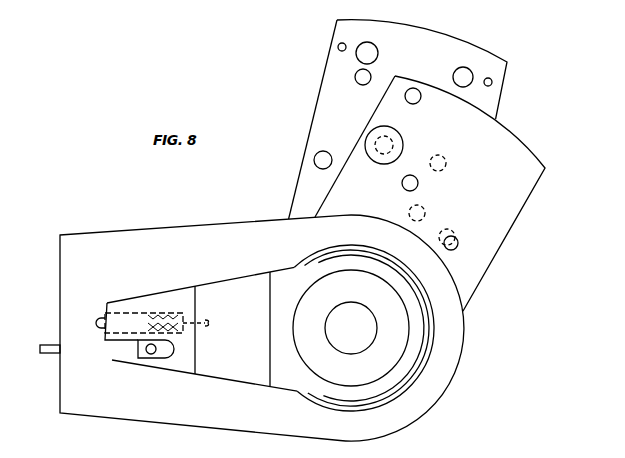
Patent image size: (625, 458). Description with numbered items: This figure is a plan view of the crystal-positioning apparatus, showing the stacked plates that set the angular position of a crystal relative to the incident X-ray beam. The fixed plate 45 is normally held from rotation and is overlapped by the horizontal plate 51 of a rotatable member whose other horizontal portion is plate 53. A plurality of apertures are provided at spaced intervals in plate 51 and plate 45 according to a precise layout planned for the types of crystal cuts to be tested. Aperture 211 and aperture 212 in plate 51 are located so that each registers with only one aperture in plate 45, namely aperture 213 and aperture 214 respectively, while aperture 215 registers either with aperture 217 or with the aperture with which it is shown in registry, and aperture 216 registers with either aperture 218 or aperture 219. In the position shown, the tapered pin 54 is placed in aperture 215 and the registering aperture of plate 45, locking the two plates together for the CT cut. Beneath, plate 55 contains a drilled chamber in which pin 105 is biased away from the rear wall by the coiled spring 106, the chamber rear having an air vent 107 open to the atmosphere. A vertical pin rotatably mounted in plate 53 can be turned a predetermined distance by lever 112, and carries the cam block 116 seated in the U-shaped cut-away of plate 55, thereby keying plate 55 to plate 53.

The plate 45 is at (333, 56).
The horizontal plate 51 is at (492, 261).
The horizontal plate 53 is at (199, 225).
The tapered pin 54 is at (370, 138).
The plate 55 is at (232, 279).
The pin 105 is at (100, 323).
The coiled spring 106 is at (163, 313).
The air vent 107 is at (211, 323).
The lever 112 is at (49, 354).
The cam block 116 is at (155, 359).
The aperture 211 is at (419, 100).
The aperture 212 is at (419, 183).
The aperture 213 is at (359, 84).
The aperture 214 is at (316, 162).
The aperture 215 is at (392, 146).
The aperture 216 is at (459, 243).
The aperture 217 is at (447, 162).
The aperture 218 is at (454, 233).
The aperture 219 is at (426, 212).